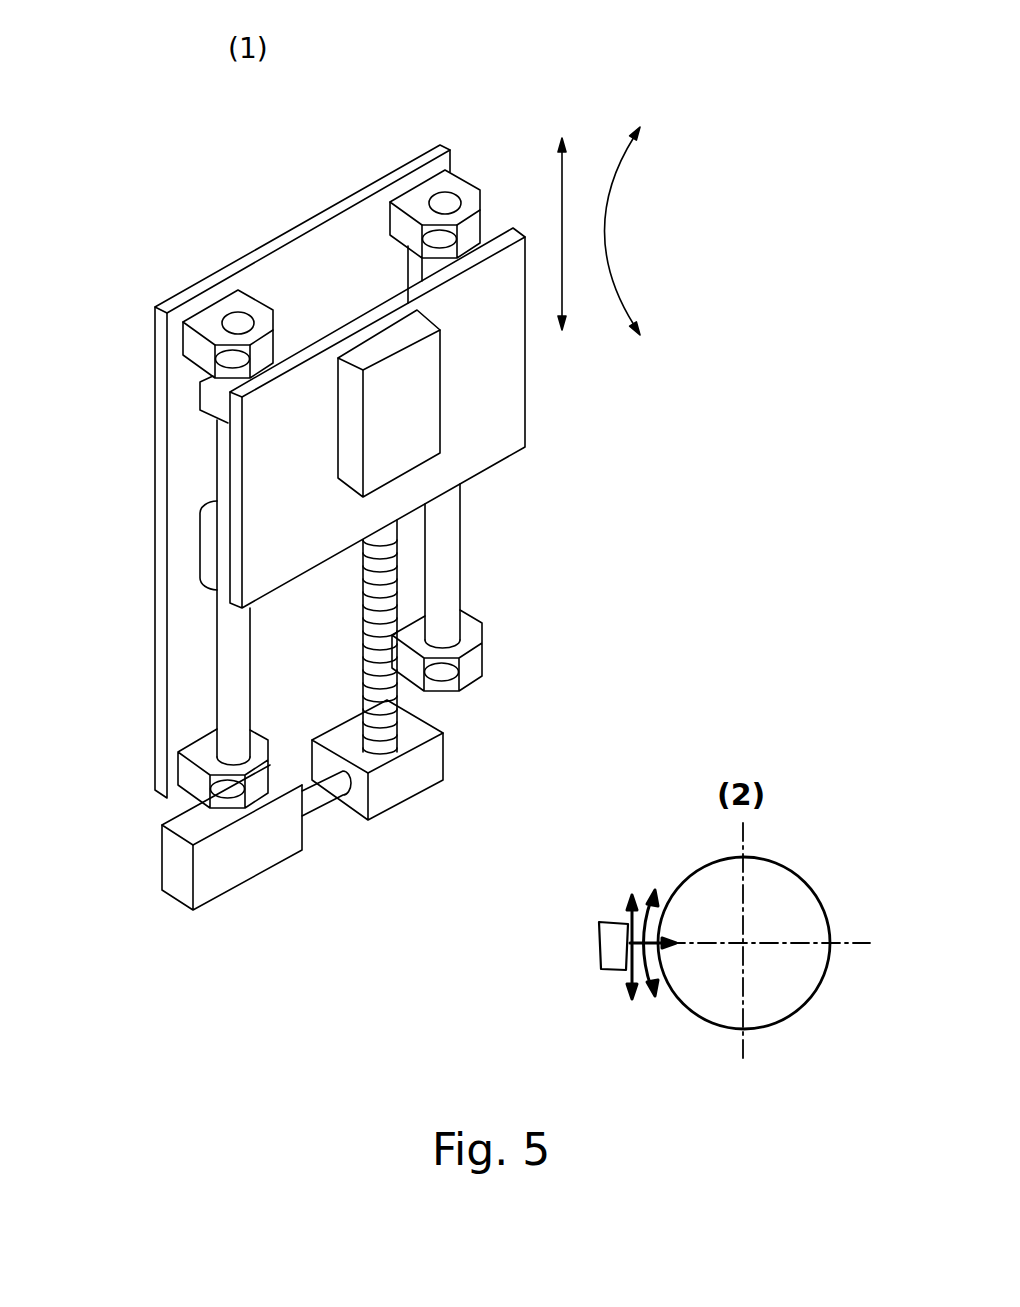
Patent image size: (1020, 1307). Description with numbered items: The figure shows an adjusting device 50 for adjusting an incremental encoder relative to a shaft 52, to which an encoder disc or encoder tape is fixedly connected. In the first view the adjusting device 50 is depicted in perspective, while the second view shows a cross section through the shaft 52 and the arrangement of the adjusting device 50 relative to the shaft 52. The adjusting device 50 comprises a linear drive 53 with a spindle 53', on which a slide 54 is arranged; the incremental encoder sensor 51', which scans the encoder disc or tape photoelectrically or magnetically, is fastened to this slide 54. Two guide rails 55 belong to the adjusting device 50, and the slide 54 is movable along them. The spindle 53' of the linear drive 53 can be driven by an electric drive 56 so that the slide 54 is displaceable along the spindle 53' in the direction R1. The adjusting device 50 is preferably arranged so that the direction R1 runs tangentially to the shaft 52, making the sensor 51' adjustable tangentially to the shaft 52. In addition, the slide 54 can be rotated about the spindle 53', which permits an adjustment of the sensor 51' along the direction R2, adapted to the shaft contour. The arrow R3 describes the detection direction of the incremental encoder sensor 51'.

The adjusting device 50 is at (362, 95).
The sensor 51' is at (513, 403).
The shaft 52 is at (827, 958).
The linear drive 53 is at (466, 862).
The spindle 53' is at (494, 637).
The slide 54 is at (528, 428).
The guide rails 55 is at (462, 520).
The electric drive 56 is at (305, 837).
The displacement direction R1 is at (606, 1010).
The rotational adjustment direction R2 is at (608, 210).
The detection direction R3 is at (652, 963).